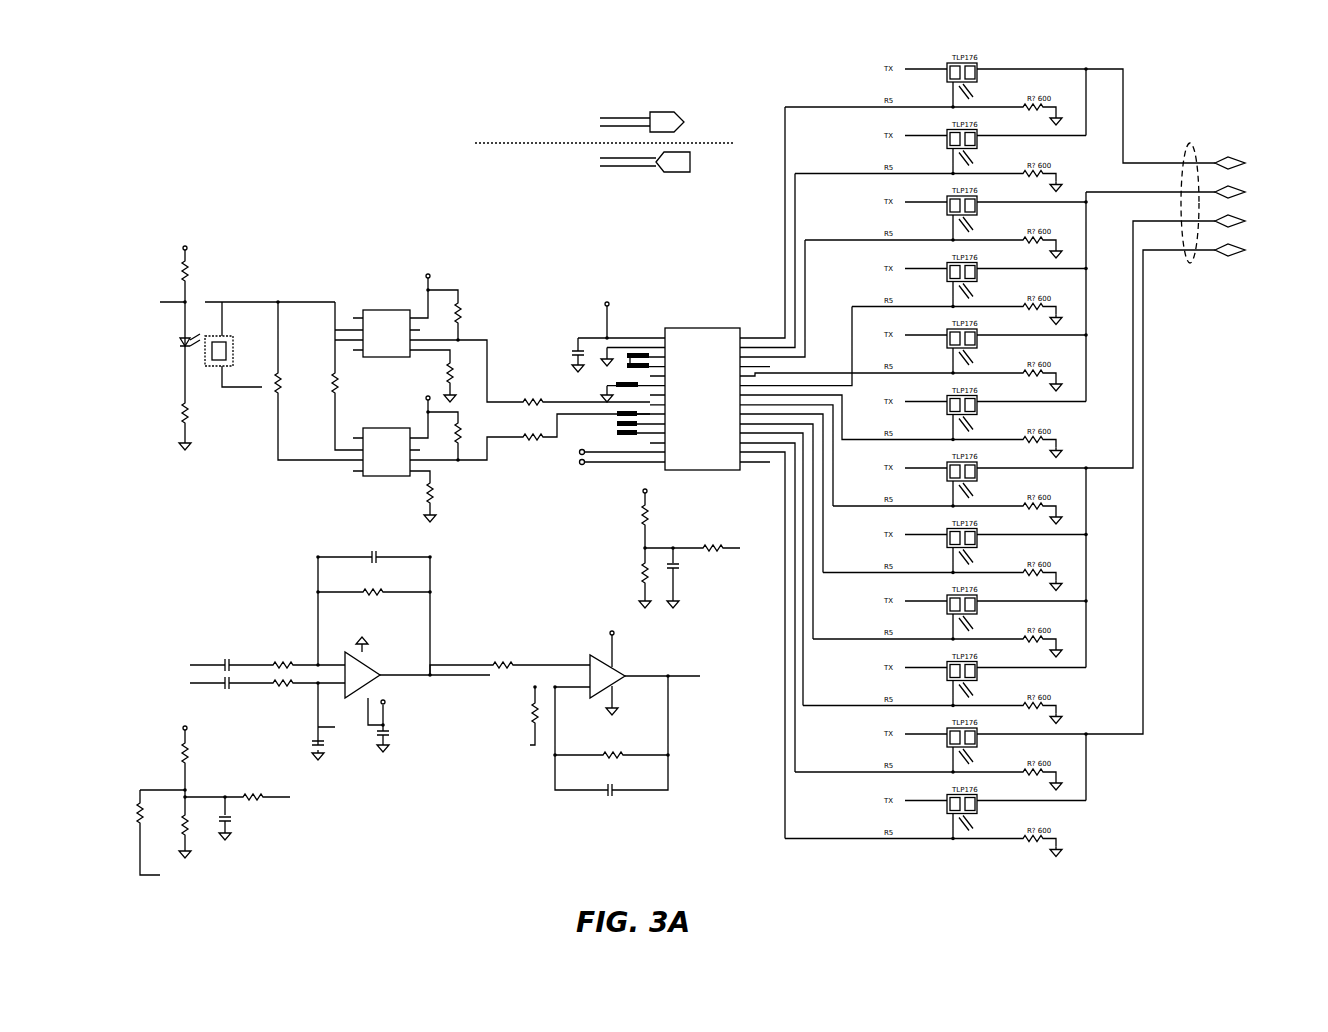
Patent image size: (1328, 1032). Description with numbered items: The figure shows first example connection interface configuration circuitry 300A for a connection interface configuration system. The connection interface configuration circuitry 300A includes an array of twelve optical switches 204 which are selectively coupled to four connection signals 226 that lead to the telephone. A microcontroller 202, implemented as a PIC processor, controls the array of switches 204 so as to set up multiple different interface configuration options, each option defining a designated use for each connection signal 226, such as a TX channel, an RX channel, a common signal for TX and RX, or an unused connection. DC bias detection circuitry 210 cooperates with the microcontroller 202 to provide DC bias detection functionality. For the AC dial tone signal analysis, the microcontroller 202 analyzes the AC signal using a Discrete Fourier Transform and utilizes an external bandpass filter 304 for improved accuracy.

The connection interface configuration circuitry 300A is at (311, 112).
The DC bias detection circuitry 210 is at (260, 230).
The microcontroller 202 is at (662, 330).
The bandpass filter 304 is at (468, 826).
The array of controllable switches 204 is at (1112, 866).
The connection signals 226 is at (1189, 268).